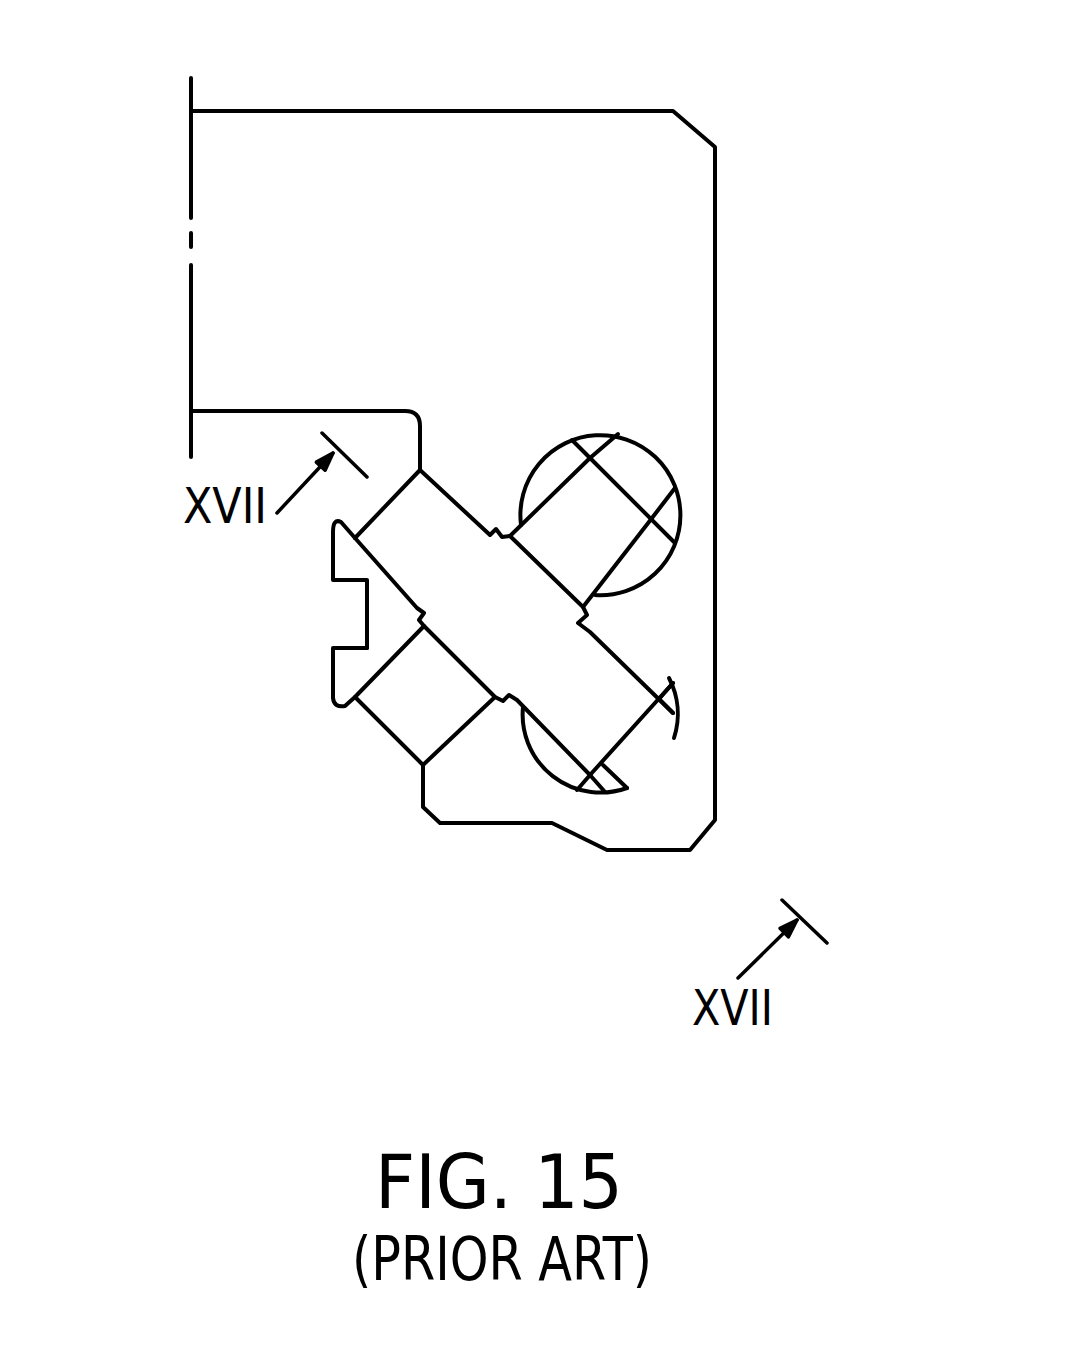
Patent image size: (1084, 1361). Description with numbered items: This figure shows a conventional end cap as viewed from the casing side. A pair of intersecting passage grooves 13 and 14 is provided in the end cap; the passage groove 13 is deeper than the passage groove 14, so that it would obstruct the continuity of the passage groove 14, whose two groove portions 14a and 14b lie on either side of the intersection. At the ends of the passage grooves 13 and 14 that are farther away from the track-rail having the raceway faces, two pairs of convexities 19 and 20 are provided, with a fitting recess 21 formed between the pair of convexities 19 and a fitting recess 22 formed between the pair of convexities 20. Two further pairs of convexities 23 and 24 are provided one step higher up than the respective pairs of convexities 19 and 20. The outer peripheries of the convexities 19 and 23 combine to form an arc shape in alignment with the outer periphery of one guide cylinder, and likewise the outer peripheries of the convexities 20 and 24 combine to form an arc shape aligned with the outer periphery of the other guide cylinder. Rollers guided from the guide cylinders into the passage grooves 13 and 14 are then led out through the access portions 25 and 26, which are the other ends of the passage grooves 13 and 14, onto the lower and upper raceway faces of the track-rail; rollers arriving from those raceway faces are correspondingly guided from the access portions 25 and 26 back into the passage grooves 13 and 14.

The passage groove 13 is at (568, 732).
The passage groove 14 is at (632, 588).
The groove portion 14a is at (560, 517).
The groove portion 14b is at (412, 715).
The convexities 19 is at (672, 704).
The convexities 20 is at (595, 435).
The fitting recess 21 is at (642, 747).
The fitting recess 22 is at (640, 488).
The convexities 23 is at (662, 676).
The convexities 24 is at (563, 465).
The access portion 25 is at (343, 515).
The access portion 26 is at (358, 708).